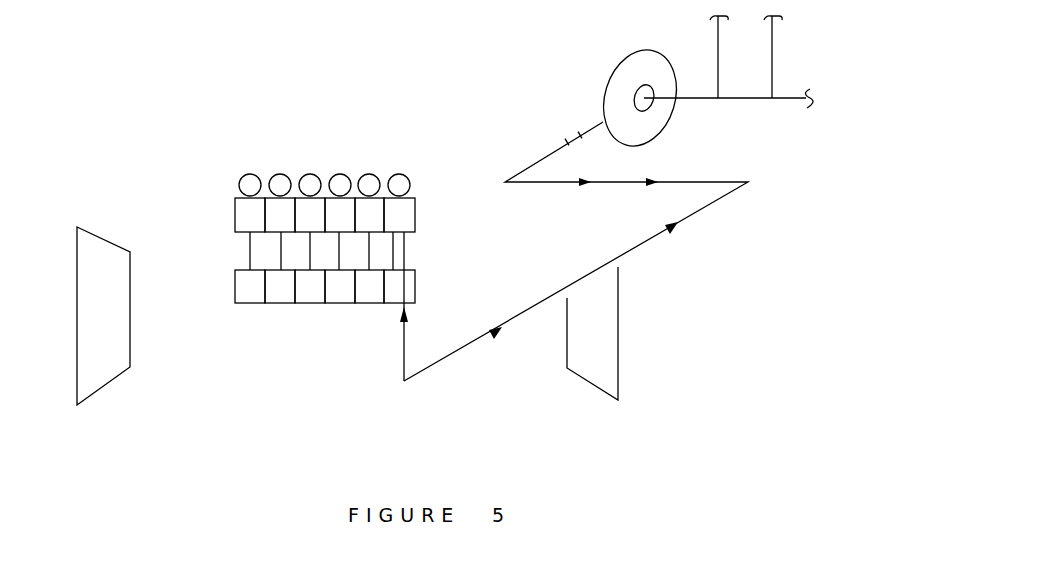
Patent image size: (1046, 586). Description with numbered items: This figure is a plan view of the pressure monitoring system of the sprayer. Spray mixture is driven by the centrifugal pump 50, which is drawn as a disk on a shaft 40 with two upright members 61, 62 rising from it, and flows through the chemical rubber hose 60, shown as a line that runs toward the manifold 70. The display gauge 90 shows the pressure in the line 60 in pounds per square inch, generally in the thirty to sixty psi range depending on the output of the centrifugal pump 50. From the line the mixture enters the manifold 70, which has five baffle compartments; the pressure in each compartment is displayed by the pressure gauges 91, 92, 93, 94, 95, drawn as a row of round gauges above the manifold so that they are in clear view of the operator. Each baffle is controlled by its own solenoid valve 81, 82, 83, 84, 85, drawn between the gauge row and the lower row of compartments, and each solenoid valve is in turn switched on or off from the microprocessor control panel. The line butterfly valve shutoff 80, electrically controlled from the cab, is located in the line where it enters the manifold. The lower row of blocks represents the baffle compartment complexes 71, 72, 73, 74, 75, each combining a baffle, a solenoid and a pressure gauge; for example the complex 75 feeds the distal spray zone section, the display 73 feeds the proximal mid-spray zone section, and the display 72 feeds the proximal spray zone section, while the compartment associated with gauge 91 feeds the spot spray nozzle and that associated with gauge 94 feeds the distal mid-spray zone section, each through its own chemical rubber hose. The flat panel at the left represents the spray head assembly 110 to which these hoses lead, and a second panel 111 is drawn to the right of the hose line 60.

The shaft 40 is at (757, 100).
The centrifugal pump 50 is at (622, 72).
The chemical rubber hose 60 is at (434, 366).
The rod 61 is at (717, 31).
The rod 62 is at (774, 32).
The manifold 70 is at (417, 306).
The unit 71 is at (369, 301).
The baffle/solenoid/pressure gauge display 72 is at (340, 301).
The baffle/solenoid/pressure gauge display 73 is at (310, 301).
The unit 74 is at (280, 301).
The baffle/solenoid/pressure gauge complex 75 is at (250, 301).
The line butterfly valve shutoff 80 is at (383, 251).
The solenoid valve 81 is at (356, 251).
The solenoid valve 82 is at (327, 251).
The solenoid valve 83 is at (297, 251).
The solenoid valve 84 is at (268, 251).
The solenoid valve 85 is at (236, 251).
The display gauge 90 is at (399, 192).
The pressure gauge 91 is at (369, 192).
The pressure gauge 92 is at (340, 192).
The pressure gauge 93 is at (310, 192).
The pressure gauge 94 is at (280, 192).
The pressure gauge 95 is at (250, 192).
The spray head assembly 110 is at (73, 322).
The plate 111 is at (627, 348).